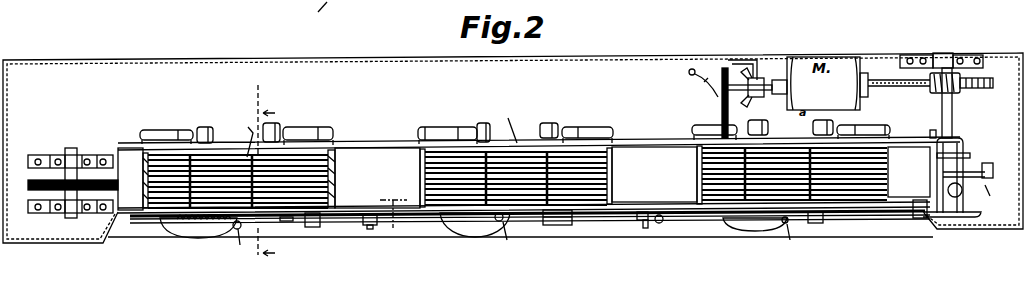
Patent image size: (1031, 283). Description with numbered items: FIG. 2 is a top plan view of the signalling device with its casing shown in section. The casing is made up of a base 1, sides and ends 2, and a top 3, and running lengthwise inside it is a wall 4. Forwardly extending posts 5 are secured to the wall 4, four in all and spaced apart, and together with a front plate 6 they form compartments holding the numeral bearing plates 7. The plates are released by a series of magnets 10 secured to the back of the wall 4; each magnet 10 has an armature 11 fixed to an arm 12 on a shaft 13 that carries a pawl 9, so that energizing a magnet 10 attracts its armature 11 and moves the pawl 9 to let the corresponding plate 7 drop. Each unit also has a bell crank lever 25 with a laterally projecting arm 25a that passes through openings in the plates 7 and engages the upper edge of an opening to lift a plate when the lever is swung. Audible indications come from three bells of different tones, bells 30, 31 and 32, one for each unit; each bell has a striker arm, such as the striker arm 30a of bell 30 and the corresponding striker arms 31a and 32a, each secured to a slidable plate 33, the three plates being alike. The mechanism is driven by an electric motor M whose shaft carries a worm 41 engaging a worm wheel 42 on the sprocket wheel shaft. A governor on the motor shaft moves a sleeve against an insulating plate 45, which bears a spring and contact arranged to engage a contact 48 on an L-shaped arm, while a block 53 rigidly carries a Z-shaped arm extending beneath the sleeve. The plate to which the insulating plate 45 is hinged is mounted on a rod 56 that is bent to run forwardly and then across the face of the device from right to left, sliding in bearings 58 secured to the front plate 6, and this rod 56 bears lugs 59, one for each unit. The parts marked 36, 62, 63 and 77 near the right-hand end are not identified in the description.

The base 1 is at (316, 11).
The sides and ends 2 is at (9, 115).
The top 3 is at (383, 223).
The wall 4 is at (357, 147).
The posts 5 is at (121, 150).
The front plate 6 is at (311, 173).
The numeral bearing plates 7 is at (420, 181).
The pawl 9 is at (142, 174).
The magnets 10 is at (204, 127).
The armature 11 is at (181, 128).
The arm 12 is at (160, 133).
The shaft 13 is at (141, 130).
The bell crank lever 25 is at (213, 147).
The laterally projecting arm 25a is at (507, 124).
The bell 30 is at (198, 228).
The striker arm 30a is at (239, 244).
The bell 31 is at (470, 237).
The striker arm 31a is at (509, 234).
The bell 32 is at (750, 231).
The striker arm 32a is at (796, 236).
The slidable plate 33 is at (400, 220).
The pipe 36 is at (978, 148).
The worm 41 is at (958, 91).
The worm wheel 42 is at (993, 85).
The insulating plate 45 is at (722, 113).
The contact 48 is at (729, 60).
The block 53 is at (703, 74).
The rod 56 is at (930, 132).
The bearings 58 is at (313, 227).
The lugs 59 is at (645, 228).
The valve 62 is at (962, 190).
The valve stem 63 is at (996, 193).
The coupling 77 is at (758, 78).